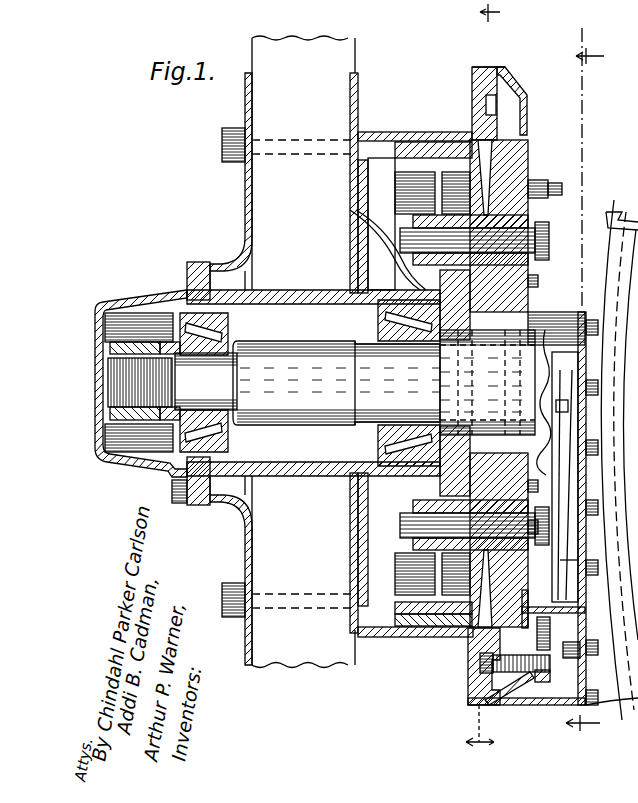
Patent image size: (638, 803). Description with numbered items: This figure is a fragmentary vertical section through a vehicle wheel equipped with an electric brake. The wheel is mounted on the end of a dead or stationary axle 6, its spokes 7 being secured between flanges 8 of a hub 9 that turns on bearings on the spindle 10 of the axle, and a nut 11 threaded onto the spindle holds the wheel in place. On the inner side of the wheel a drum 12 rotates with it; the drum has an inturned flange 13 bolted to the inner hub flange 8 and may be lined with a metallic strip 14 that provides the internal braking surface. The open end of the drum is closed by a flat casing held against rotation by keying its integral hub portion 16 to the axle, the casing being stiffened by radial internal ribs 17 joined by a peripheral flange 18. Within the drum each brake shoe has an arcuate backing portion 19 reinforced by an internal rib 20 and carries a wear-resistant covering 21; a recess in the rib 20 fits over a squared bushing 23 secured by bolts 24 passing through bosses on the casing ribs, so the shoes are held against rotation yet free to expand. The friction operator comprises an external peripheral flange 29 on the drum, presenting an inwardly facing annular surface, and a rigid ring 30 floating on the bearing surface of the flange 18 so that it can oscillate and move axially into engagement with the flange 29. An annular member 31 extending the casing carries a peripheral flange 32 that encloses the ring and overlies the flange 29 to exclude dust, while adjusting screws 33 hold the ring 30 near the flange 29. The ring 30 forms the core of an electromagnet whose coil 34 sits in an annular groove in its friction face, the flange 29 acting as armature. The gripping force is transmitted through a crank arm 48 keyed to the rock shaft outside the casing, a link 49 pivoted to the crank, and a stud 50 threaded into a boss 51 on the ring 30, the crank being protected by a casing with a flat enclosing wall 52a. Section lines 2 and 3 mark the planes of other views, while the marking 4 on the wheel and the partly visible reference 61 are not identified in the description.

The section line 2- 2 is at (585, 388).
The section line 3- 3 is at (483, 385).
The wheel 4 is at (620, 385).
The axle 6 is at (538, 340).
The spokes 7 is at (303, 352).
The flanges 8 is at (253, 212).
The hub 9 is at (318, 290).
The spindle 10 is at (307, 383).
The nut 11 is at (140, 312).
The drum 12 is at (395, 132).
The inturned flange 13 is at (352, 190).
The strip 14 is at (418, 142).
The hub portion 16 is at (472, 320).
The internal ribs 17 is at (522, 165).
The peripheral flange 18 is at (505, 138).
The arcuate backing portion 19 is at (381, 224).
The internal rib 20 is at (432, 383).
The covering 21 is at (408, 612).
The squared bushing 23 is at (474, 383).
The bolts 24 is at (470, 382).
The external peripheral flange 29 is at (472, 80).
The ring 30 is at (480, 707).
The annular member 31 is at (528, 102).
The peripheral flange 32 is at (487, 67).
The adjusting screws 33 is at (548, 186).
The coil 34 is at (478, 660).
The crank arm 48 is at (575, 525).
The link 49 is at (550, 632).
The stud 50 is at (552, 668).
The boss 51 is at (525, 706).
The flat enclosing wall 52a is at (580, 560).
The wheel rim bracket 61 is at (628, 222).